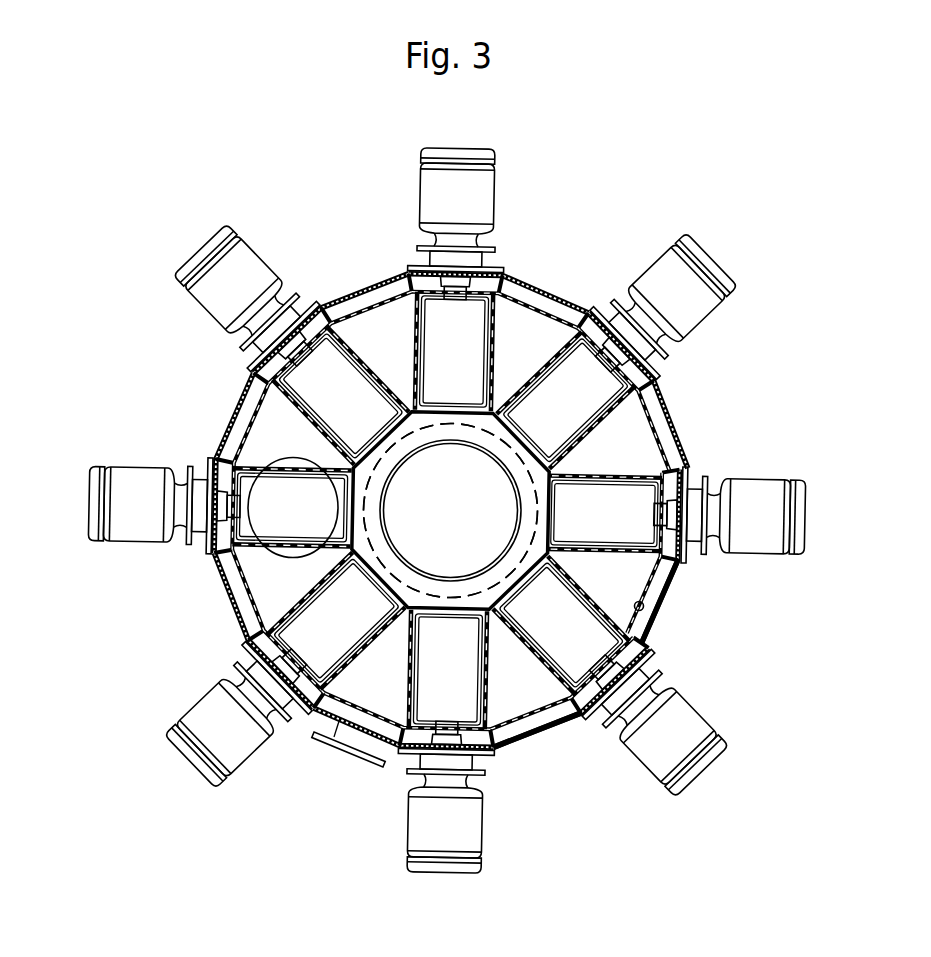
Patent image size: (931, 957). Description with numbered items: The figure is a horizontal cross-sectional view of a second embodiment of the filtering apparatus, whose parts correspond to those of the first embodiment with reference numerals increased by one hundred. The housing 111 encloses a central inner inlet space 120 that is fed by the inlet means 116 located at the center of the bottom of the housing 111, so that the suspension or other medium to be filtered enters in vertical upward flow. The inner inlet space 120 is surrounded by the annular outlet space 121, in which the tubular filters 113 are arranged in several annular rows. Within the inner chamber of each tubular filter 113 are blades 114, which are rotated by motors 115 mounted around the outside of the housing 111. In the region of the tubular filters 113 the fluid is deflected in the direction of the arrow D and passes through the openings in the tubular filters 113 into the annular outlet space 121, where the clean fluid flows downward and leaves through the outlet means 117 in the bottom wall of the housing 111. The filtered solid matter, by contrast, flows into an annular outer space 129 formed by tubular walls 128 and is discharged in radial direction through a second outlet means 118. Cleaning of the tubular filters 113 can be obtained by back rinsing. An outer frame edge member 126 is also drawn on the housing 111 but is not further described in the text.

The housing 111 is at (226, 410).
The tubular filters 113 is at (491, 342).
The blades 114 is at (424, 346).
The motors 115 is at (483, 197).
The inlet means 116 is at (394, 537).
The outlet means 117 is at (288, 553).
The second outlet means 118 is at (364, 750).
The inner inlet space 120 is at (500, 590).
The annular outlet space 121 is at (645, 443).
The frame edge member 126 is at (522, 725).
The tubular walls 128 is at (644, 610).
The annular outer space 129 is at (678, 578).
The arrow D is at (483, 483).